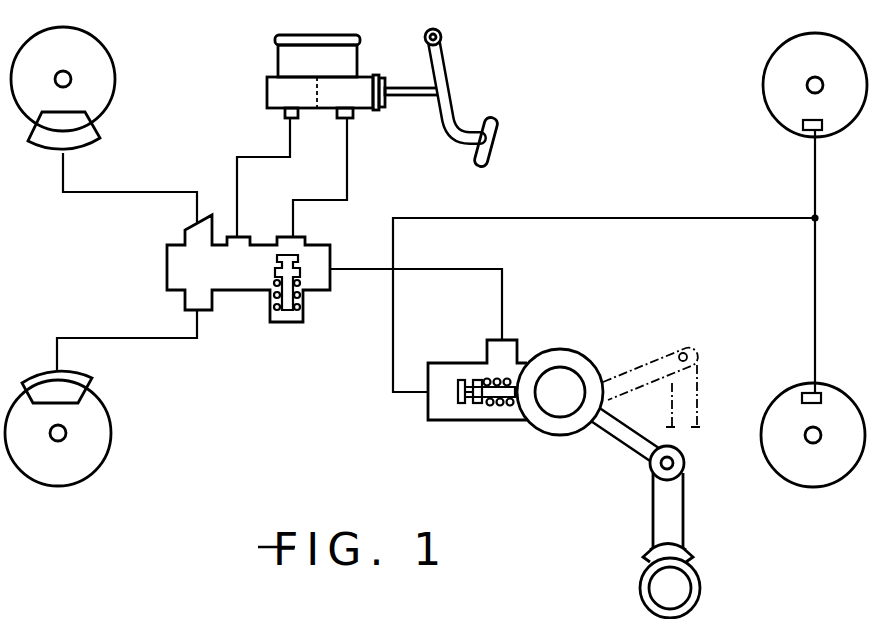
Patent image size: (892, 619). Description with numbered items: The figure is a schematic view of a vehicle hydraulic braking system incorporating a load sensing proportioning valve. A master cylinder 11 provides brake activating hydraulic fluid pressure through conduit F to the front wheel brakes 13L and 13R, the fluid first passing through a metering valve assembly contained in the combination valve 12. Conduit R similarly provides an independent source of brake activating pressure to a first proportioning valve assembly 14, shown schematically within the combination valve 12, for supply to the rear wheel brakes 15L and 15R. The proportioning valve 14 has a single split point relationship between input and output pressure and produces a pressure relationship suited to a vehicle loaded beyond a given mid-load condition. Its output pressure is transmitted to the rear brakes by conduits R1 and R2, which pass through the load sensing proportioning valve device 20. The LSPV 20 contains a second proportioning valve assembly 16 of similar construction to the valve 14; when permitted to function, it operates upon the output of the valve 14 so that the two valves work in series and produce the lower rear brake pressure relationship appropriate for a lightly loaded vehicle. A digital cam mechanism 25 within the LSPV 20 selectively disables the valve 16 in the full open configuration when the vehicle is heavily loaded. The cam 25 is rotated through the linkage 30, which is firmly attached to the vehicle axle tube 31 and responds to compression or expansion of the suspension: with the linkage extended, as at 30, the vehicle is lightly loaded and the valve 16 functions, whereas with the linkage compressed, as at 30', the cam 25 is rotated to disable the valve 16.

The master cylinder 11 is at (293, 36).
The combination valve 12 is at (155, 267).
The right front wheel brake 13R is at (85, 147).
The left front wheel brake 13L is at (95, 378).
The first proportioning valve assembly 14 is at (298, 277).
The right rear wheel brake 15R is at (803, 130).
The left rear wheel brake 15L is at (822, 397).
The second proportioning valve assembly 16 is at (477, 405).
The load sensing proportioning valve device 20 is at (517, 432).
The digital cam mechanism 25 is at (572, 350).
The linkage 30 is at (672, 487).
The compressed linkage position 30' is at (675, 349).
The vehicle axle tube 31 is at (700, 600).
The conduit F is at (292, 158).
The conduit R is at (347, 165).
The conduit R1 is at (435, 269).
The conduit R2 is at (618, 218).